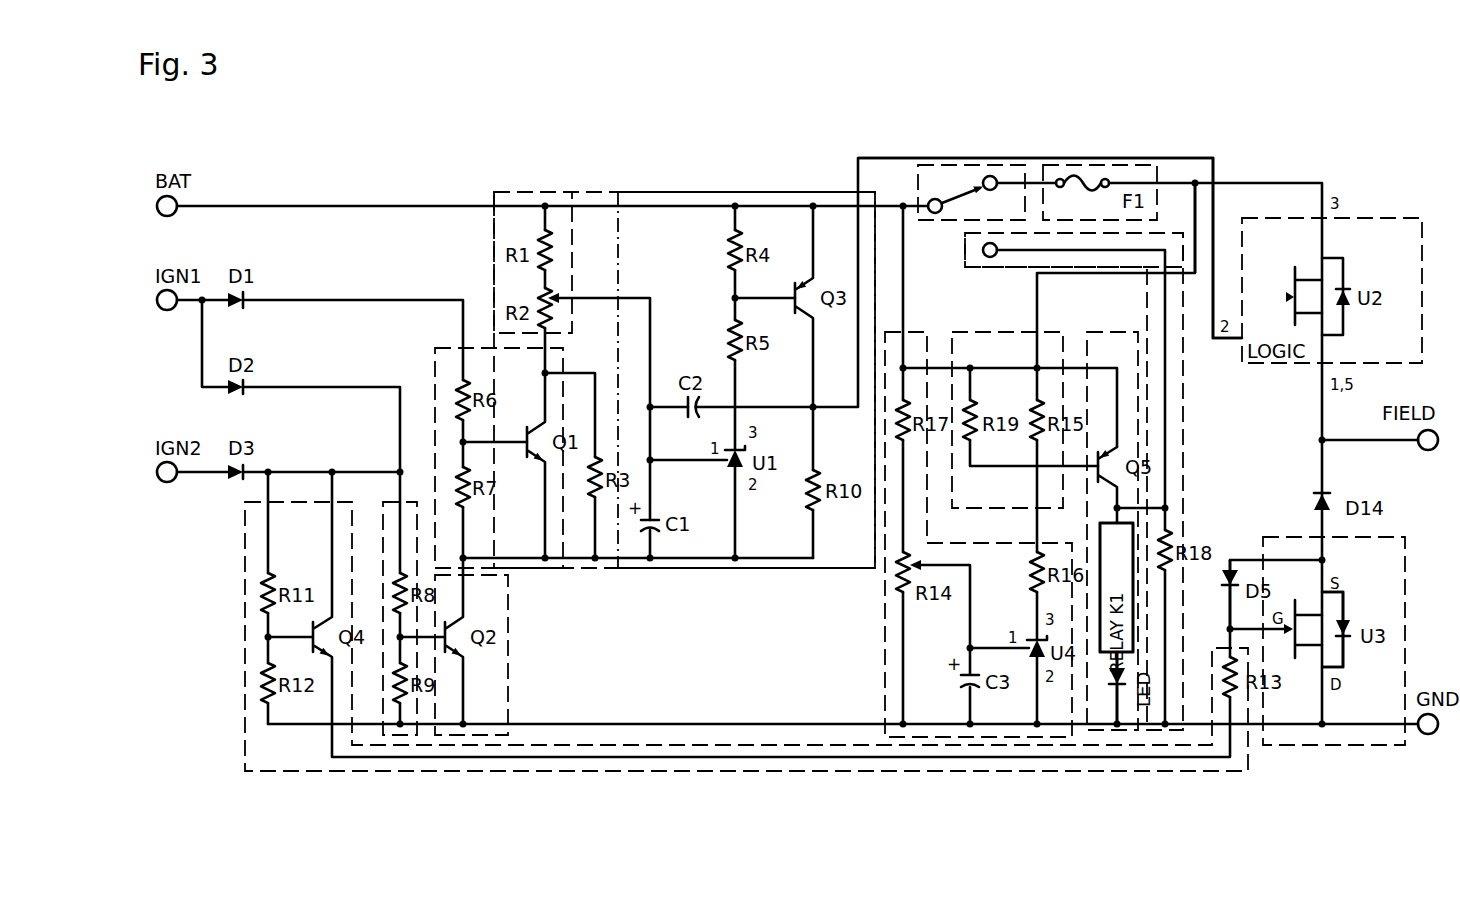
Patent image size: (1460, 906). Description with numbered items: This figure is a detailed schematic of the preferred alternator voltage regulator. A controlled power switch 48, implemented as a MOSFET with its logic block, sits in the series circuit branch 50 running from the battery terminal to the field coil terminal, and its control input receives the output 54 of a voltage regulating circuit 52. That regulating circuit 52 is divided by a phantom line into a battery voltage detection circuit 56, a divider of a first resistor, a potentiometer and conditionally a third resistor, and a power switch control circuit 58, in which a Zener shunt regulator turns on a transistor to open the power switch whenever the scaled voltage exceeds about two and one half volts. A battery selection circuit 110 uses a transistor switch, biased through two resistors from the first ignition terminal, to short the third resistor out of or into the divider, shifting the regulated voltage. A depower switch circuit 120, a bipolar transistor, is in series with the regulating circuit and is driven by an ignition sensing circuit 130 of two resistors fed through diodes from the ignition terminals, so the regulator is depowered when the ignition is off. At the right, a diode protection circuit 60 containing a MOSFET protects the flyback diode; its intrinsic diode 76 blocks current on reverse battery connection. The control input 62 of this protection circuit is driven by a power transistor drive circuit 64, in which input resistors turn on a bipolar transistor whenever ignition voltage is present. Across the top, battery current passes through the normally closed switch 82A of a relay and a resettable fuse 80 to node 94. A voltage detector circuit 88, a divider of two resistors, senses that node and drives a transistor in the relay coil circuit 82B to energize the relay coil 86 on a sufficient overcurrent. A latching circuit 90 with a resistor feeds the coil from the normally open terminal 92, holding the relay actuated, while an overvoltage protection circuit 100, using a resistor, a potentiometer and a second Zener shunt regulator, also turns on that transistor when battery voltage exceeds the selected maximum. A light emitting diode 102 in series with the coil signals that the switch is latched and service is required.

The controlled power switch 48 is at (1357, 218).
The series circuit branch 50 is at (639, 205).
The voltage regulating circuit 52 is at (545, 192).
The output of the voltage regulating circuit 54 is at (1176, 158).
The battery voltage detection circuit 56 is at (494, 200).
The power switch control circuit 58 is at (763, 192).
The diode protection circuit 60 is at (1405, 598).
The control input of the diode protection circuit 62 is at (1232, 629).
The power transistor drive circuit 64 is at (423, 771).
The intrinsic diode of the MOSFET U3 76 is at (1346, 636).
The resettable fuse 80 is at (1100, 165).
The normally closed switch 82A is at (933, 165).
The relay coil circuit 82B is at (1113, 332).
The relay coil 86 is at (1135, 525).
The voltage detector circuit 88 is at (990, 332).
The latching circuit 90 is at (1185, 386).
The normally open terminal 92 is at (965, 250).
The node 94 is at (1198, 181).
The overvoltage protection circuit 100 is at (883, 693).
The light emitting diode 102 is at (1110, 680).
The battery selection circuit 110 is at (435, 362).
The depower switch circuit 120 is at (508, 671).
The ignition sensing circuit 130 is at (395, 737).